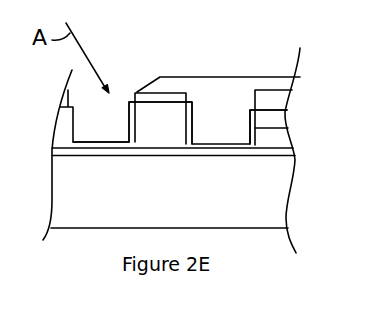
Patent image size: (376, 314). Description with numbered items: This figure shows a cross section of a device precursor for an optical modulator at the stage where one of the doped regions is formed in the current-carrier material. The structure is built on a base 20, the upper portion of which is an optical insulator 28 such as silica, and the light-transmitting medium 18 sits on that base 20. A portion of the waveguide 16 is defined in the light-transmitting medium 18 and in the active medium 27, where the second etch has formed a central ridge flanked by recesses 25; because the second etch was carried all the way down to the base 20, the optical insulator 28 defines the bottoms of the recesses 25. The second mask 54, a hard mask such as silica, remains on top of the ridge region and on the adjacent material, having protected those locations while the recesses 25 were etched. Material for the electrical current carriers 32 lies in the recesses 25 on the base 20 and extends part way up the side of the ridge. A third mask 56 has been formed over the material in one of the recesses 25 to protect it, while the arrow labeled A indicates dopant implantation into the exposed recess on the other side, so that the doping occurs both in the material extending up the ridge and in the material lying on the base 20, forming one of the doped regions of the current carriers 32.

The waveguide 16 is at (140, 143).
The light-transmitting medium 18 is at (58, 132).
The base 20 is at (304, 229).
The recesses 25 is at (257, 129).
The active medium 27 is at (100, 217).
The optical insulator 28 is at (60, 157).
The current carriers 32 is at (83, 142).
The second mask 54 is at (137, 93).
The third mask 56 is at (209, 82).